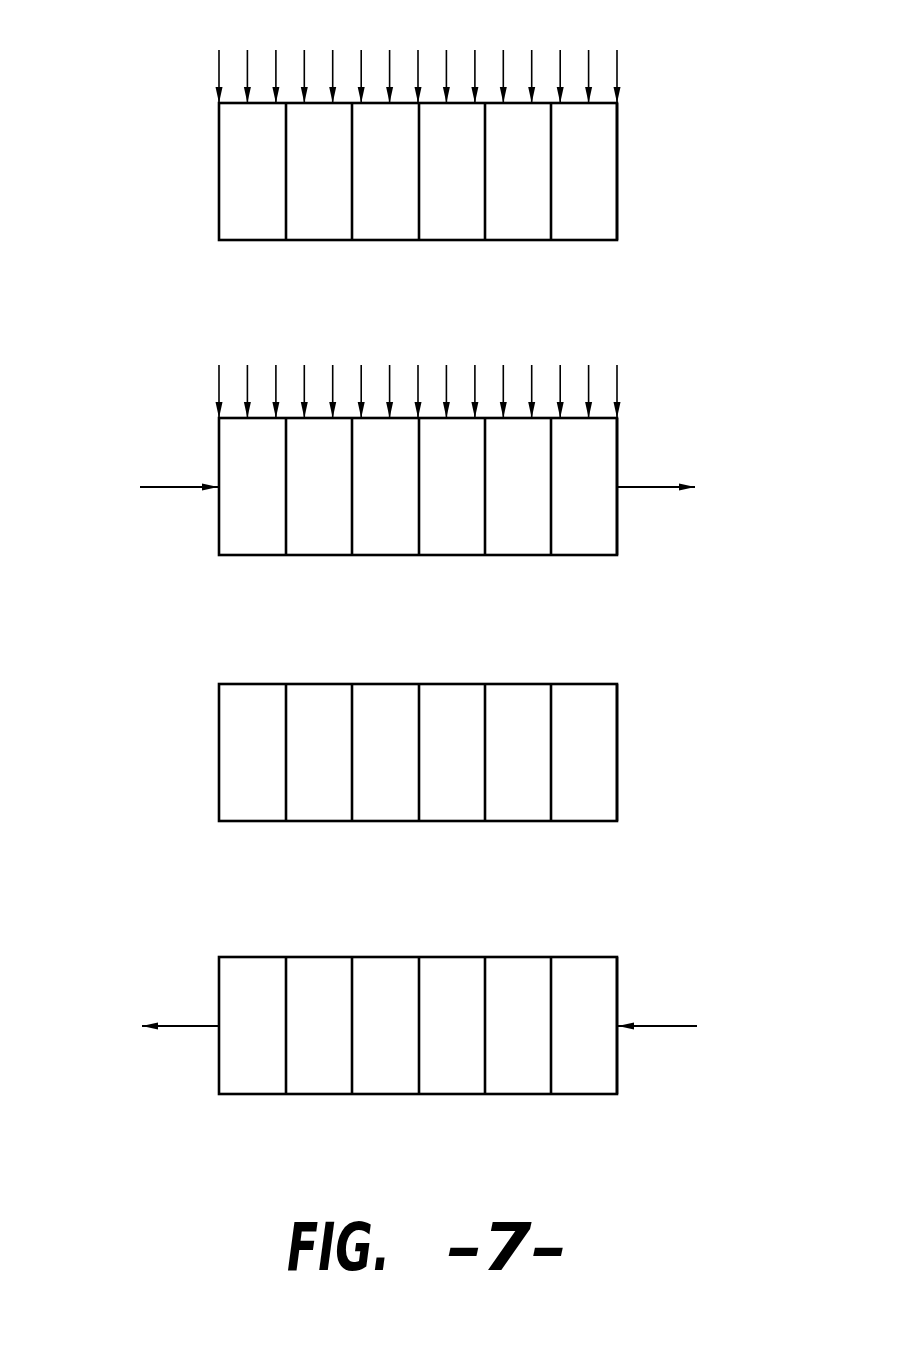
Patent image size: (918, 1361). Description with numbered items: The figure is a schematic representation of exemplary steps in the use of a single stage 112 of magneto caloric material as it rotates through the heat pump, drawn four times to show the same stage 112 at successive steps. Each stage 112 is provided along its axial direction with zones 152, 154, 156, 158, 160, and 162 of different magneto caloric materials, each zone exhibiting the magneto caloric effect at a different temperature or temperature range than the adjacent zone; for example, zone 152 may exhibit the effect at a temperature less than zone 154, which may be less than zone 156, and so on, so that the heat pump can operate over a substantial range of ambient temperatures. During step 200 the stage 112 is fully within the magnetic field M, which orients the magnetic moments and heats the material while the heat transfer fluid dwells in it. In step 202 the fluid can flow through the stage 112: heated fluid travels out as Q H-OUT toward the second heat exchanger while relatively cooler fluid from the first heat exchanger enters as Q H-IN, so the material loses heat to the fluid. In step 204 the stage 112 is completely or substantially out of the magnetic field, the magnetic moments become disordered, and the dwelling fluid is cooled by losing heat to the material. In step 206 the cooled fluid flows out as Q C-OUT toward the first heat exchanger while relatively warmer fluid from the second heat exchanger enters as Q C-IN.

The stage 112 is at (233, 134).
The zone 152 is at (248, 213).
The zone 154 is at (317, 218).
The zone 156 is at (383, 220).
The zone 158 is at (453, 218).
The zone 160 is at (520, 220).
The zone 162 is at (582, 220).
The step 200 is at (647, 162).
The step 202 is at (648, 452).
The step 204 is at (642, 746).
The step 206 is at (643, 985).